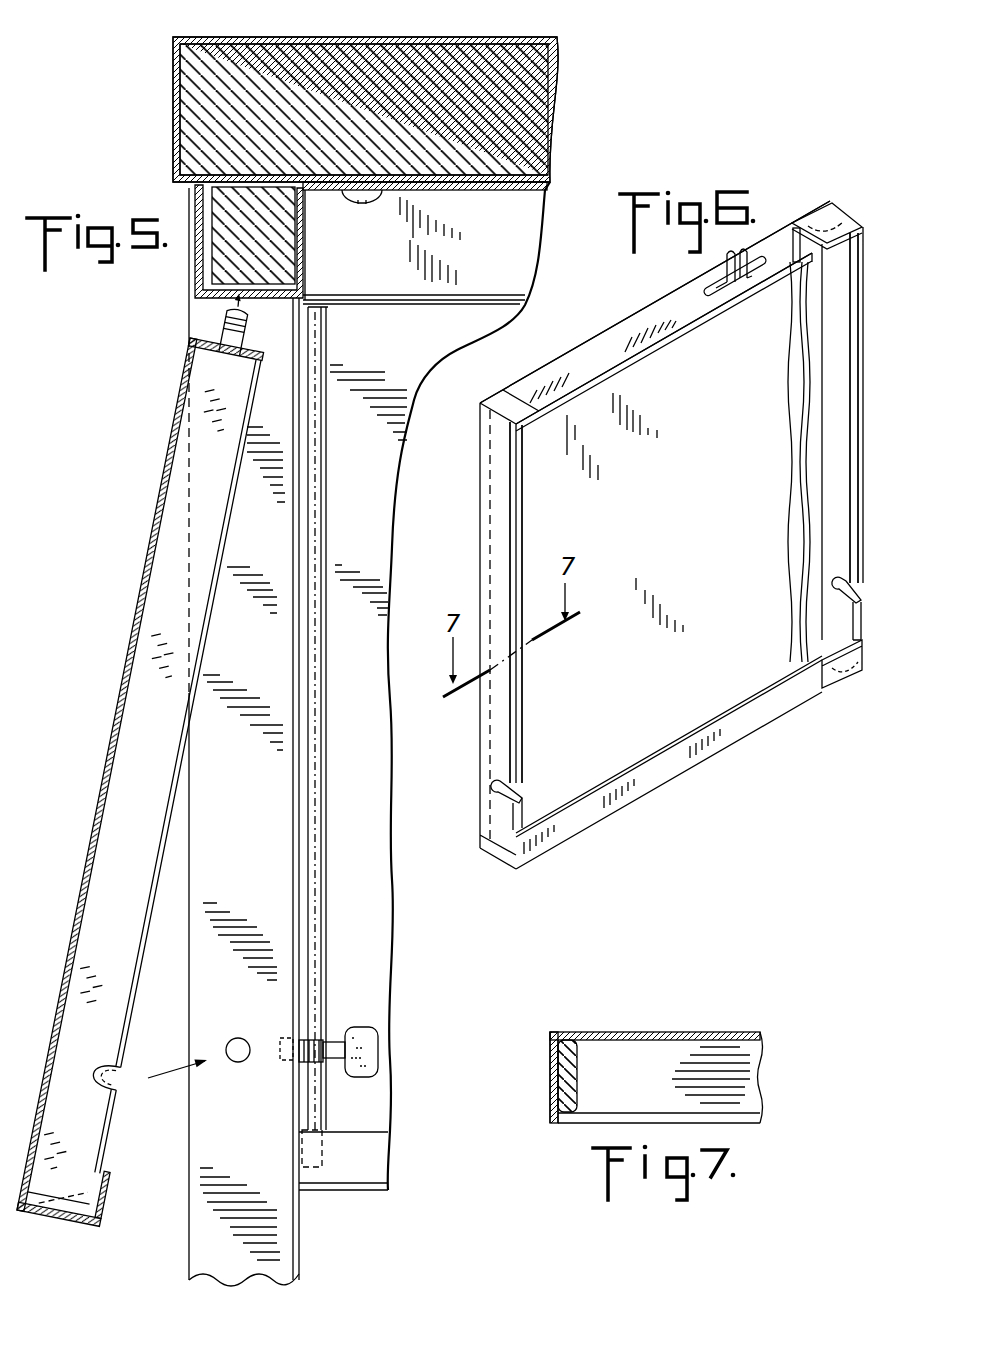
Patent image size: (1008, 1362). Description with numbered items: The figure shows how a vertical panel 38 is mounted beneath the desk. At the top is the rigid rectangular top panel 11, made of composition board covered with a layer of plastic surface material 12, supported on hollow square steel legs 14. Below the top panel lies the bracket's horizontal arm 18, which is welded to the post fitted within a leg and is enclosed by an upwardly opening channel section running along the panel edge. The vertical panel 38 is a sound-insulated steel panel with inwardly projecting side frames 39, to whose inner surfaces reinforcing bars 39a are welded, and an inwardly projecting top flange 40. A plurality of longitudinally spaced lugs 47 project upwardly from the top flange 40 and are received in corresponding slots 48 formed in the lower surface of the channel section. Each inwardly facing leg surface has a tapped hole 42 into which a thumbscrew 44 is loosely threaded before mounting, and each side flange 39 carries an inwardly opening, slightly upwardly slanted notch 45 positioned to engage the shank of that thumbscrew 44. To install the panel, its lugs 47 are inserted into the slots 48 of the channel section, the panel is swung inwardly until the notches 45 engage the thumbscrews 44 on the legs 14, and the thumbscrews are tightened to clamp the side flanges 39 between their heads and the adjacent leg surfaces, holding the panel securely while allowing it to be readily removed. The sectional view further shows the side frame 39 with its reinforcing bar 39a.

In FIG. 5, the top panel 11 is at (192, 103).
In FIG. 5, the plastic surface material 12 is at (307, 38).
In FIG. 5, the legs 14 is at (268, 1250).
In FIG. 5, the horizontal arm 18 is at (212, 205).
In FIG. 5, the vertical panel 38 is at (128, 633).
In FIG. 6, the vertical panel 38 is at (677, 723).
In FIG. 7, the vertical panel 38 is at (645, 1032).
In FIG. 6, the side frame 39 is at (497, 497).
In FIG. 7, the side frame 39 is at (550, 1105).
In FIG. 5, the reinforcing bar 39a is at (313, 737).
In FIG. 6, the reinforcing bar 39a is at (523, 722).
In FIG. 7, the reinforcing bar 39a is at (558, 1082).
In FIG. 6, the top flange 40 is at (617, 337).
In FIG. 5, the tapped hole 42 is at (237, 1062).
In FIG. 5, the thumbscrew 44 is at (368, 1030).
In FIG. 5, the notch 45 is at (103, 1072).
In FIG. 6, the notch 45 is at (497, 792).
In FIG. 5, the lug 47 is at (228, 323).
In FIG. 6, the lug 47 is at (728, 255).
In FIG. 5, the slot 48 is at (225, 300).